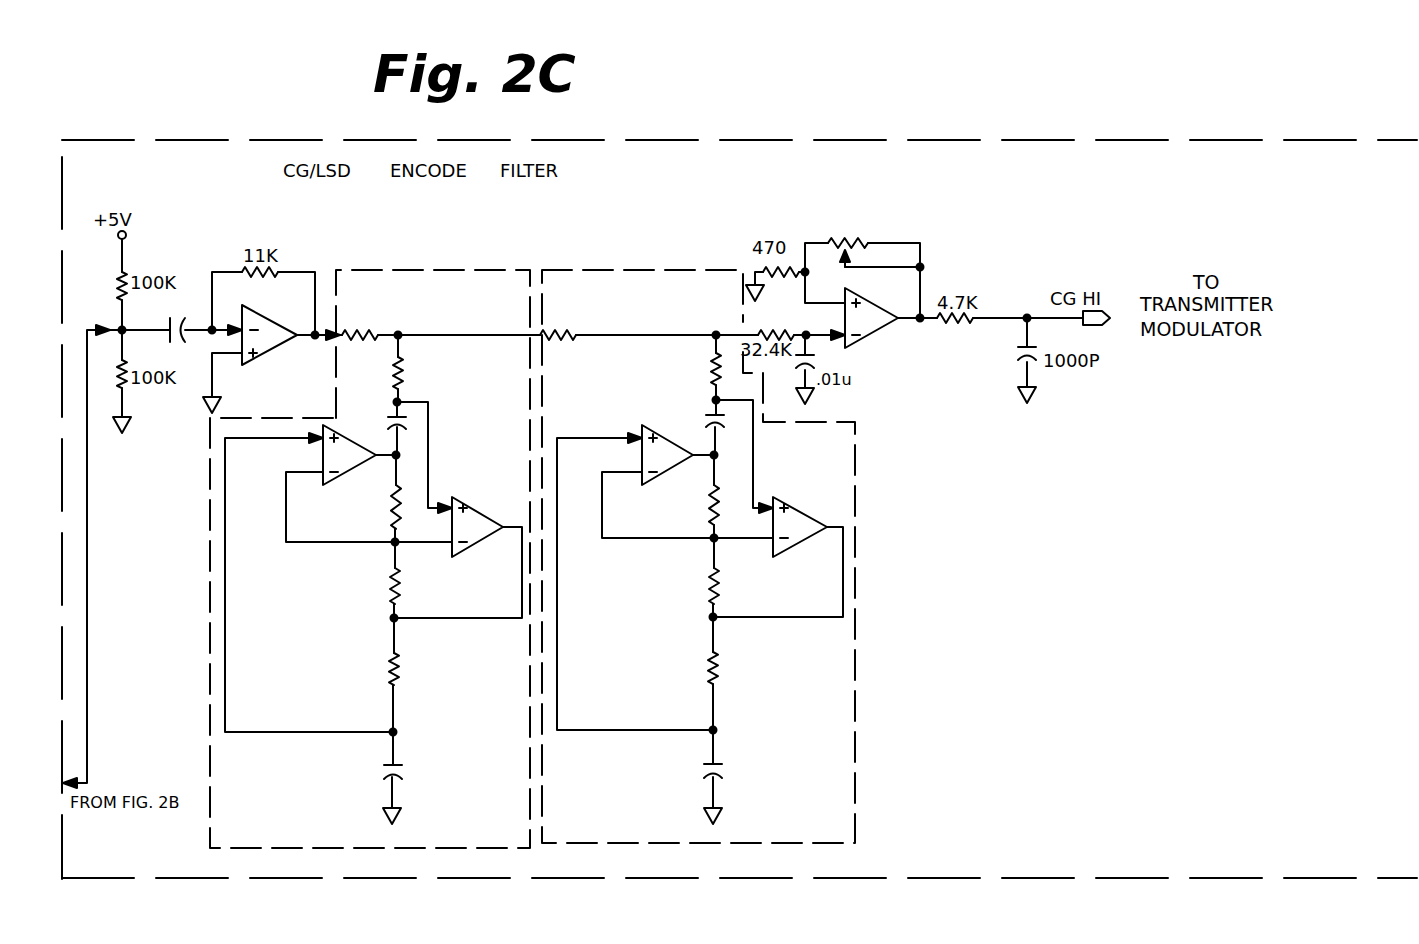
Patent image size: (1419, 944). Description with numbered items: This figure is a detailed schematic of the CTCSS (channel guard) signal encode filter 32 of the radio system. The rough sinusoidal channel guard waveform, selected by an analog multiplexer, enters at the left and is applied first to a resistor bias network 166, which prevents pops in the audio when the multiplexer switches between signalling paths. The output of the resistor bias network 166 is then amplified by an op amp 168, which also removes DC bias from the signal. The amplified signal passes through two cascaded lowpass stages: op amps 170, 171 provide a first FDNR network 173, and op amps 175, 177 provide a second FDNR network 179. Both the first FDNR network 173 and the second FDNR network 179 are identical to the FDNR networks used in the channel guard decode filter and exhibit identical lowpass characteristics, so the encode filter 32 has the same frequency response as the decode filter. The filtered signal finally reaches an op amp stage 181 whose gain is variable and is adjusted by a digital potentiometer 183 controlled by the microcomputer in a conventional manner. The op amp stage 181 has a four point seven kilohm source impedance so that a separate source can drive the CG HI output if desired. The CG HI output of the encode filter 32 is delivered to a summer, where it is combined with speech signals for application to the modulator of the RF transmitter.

The CTCSS signal encode filter 32 is at (793, 140).
The resistor bias network 166 is at (178, 313).
The op amp 168 is at (256, 308).
The op amp 170 is at (323, 460).
The op amp 171 is at (455, 498).
The first FDNR network 173 is at (427, 270).
The op amp 175 is at (643, 430).
The op amp 177 is at (774, 497).
The second FDNR network 179 is at (641, 270).
The op amp stage 181 is at (887, 324).
The digital potentiometer 183 is at (867, 243).